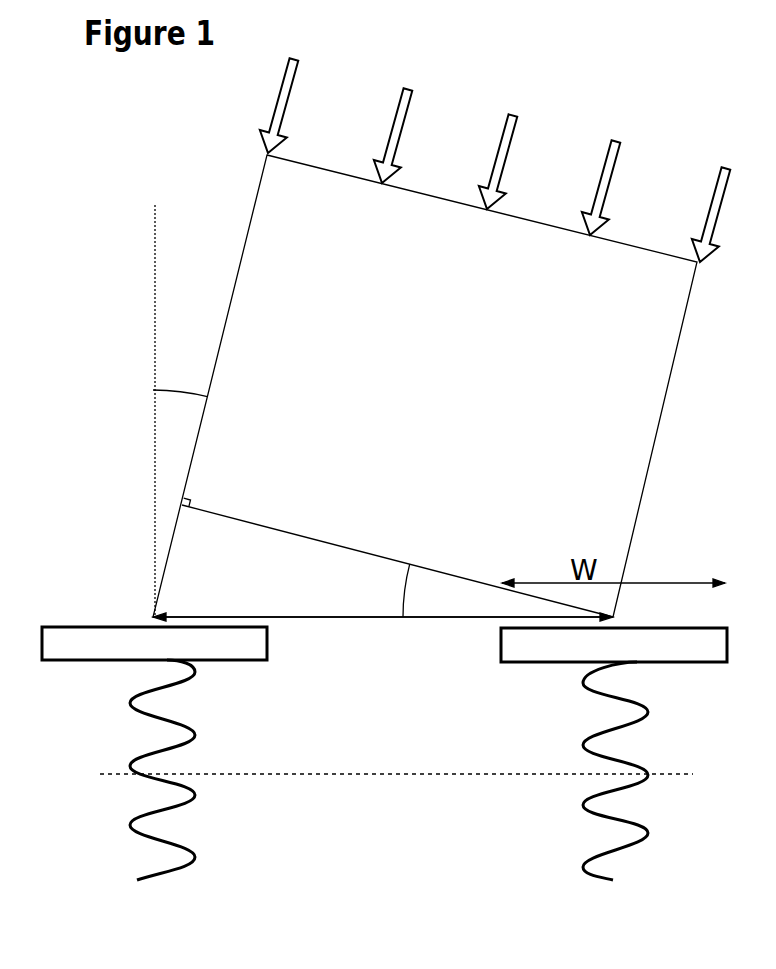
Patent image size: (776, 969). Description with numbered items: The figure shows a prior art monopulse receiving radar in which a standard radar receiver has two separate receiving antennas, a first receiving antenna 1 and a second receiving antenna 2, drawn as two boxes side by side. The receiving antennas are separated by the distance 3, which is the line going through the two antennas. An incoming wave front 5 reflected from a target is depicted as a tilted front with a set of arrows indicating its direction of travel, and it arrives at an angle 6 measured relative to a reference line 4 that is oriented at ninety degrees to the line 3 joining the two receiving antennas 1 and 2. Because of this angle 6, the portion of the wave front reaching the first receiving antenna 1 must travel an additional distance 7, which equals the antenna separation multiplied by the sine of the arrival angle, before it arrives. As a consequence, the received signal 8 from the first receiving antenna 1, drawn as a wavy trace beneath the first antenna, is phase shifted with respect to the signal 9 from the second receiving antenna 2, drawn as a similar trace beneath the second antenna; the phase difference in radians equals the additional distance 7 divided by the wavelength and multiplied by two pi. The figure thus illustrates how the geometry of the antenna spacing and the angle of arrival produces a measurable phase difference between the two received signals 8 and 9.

The receiving antenna RX1 1 is at (232, 660).
The receiving antenna RX2 2 is at (700, 662).
The distance D12 3 is at (287, 617).
The line perpendicular to the antenna baseline 4 is at (155, 253).
The incoming wave front 5 is at (430, 195).
The angle E 6 is at (178, 391).
The additional distance D12·sin(E) 7 is at (170, 562).
The received signal from RX1 8 is at (187, 807).
The received signal from RX2 9 is at (643, 783).